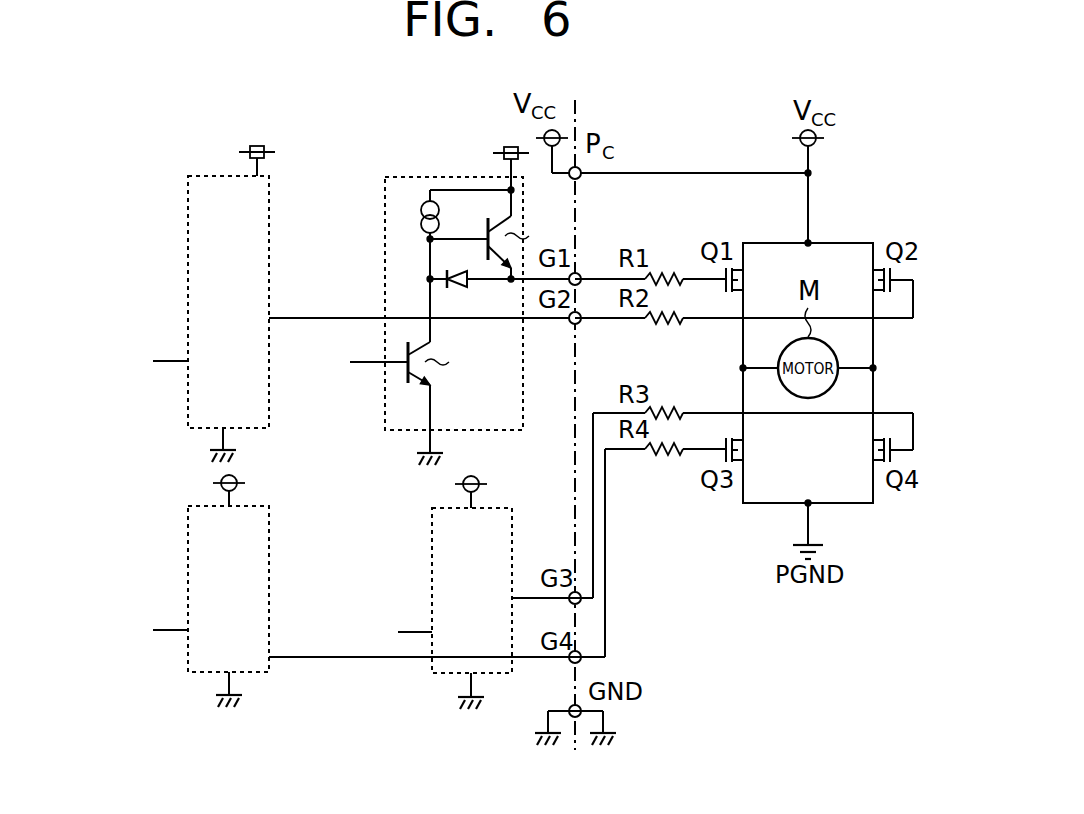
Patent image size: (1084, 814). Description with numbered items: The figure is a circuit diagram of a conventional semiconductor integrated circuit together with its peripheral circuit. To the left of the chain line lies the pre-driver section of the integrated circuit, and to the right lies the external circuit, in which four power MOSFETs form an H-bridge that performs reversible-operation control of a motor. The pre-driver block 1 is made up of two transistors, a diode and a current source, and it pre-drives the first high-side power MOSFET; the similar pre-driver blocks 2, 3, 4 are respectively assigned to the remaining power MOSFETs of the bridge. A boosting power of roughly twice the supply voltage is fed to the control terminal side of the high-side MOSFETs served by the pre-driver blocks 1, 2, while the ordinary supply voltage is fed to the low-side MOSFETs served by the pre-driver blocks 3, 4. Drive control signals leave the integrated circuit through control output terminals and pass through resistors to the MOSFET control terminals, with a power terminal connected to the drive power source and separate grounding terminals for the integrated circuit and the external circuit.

The pre-driver block 1 is at (385, 188).
The pre-driver block 2 is at (188, 188).
The pre-driver block 3 is at (432, 520).
The pre-driver block 4 is at (188, 518).